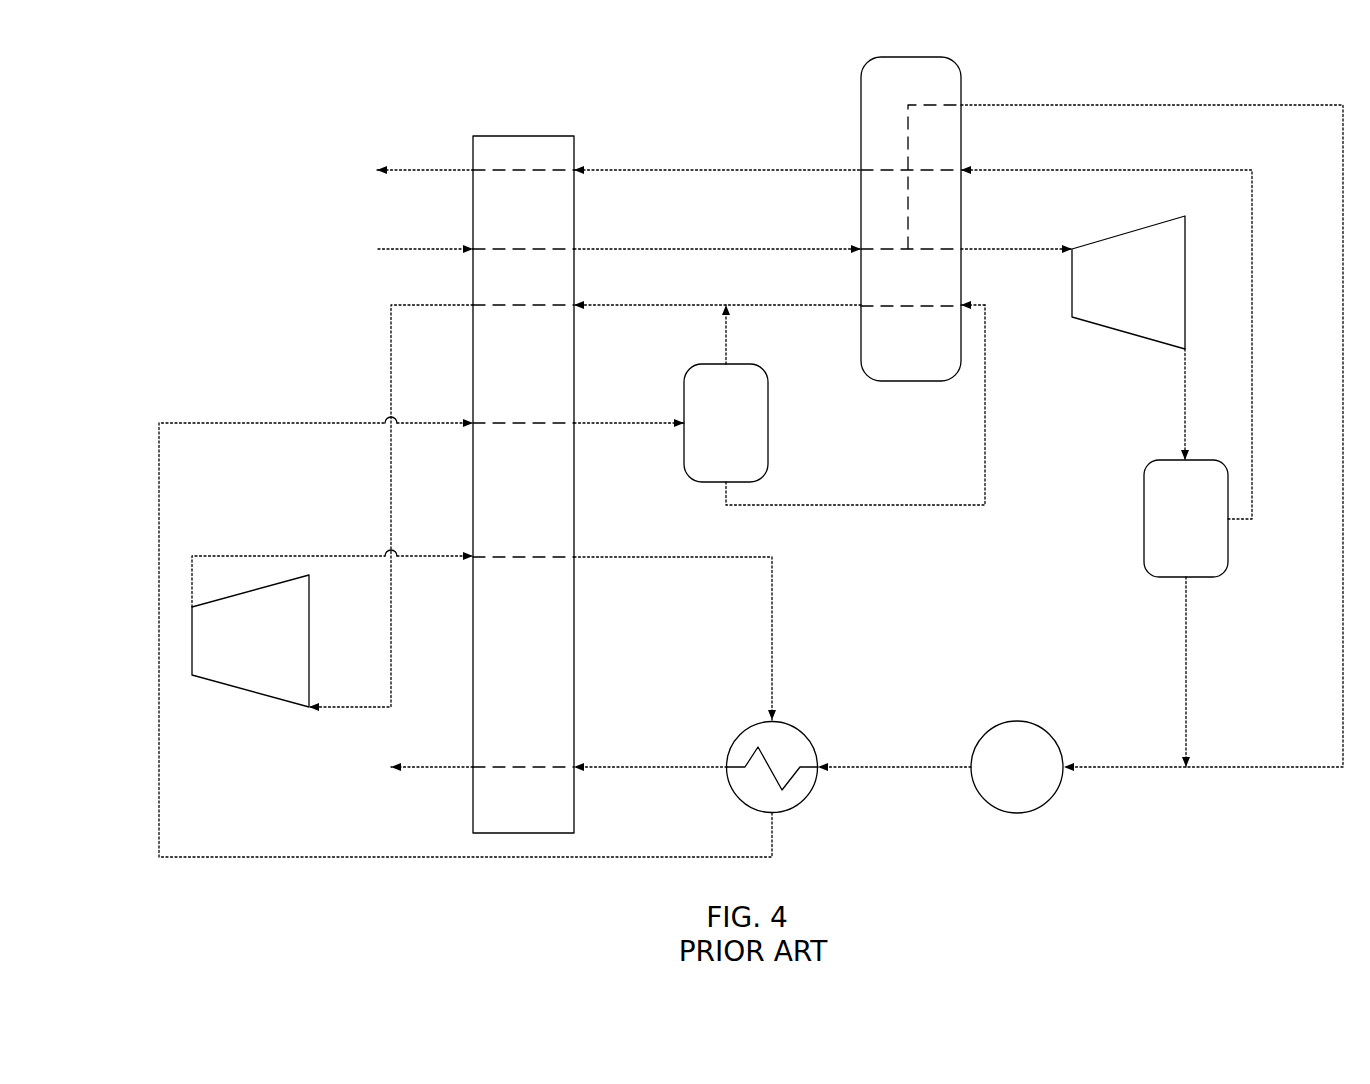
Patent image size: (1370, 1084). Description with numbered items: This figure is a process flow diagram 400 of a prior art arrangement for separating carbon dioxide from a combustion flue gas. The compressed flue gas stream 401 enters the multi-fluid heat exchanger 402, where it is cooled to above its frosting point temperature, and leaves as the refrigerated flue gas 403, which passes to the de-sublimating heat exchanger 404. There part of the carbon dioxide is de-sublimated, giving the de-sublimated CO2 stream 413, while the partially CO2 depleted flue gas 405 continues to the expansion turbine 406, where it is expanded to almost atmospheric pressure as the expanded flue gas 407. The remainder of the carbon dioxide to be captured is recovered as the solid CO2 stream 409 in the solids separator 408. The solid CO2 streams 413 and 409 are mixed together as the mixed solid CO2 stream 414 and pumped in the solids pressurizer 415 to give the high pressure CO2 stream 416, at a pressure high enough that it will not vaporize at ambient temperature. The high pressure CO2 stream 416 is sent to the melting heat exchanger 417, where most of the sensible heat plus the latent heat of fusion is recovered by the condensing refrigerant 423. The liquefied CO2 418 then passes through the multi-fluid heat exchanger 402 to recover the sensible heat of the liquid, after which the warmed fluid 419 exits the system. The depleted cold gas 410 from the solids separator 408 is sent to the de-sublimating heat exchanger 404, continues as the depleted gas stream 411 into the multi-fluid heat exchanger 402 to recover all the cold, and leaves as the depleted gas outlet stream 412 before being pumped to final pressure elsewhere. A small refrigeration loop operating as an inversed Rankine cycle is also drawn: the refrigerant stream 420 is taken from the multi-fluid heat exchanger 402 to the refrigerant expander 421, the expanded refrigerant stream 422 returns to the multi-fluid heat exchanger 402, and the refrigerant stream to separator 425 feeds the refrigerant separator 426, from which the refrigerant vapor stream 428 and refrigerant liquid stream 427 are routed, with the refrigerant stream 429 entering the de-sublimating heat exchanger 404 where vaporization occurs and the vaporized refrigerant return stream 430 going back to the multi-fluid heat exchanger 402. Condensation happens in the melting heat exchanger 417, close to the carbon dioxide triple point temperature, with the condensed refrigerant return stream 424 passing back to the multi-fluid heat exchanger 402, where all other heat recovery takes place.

The process flow diagram 400 is at (240, 105).
The compressed flue gas stream 401 is at (396, 250).
The multi-fluid heat exchanger 402 is at (574, 484).
The refrigerated flue gas 403 is at (717, 236).
The de-sublimating heat exchanger 404 is at (861, 113).
The partially CO2 depleted flue gas 405 is at (1016, 236).
The expansion turbine 406 is at (1080, 320).
The expanded flue gas 407 is at (1158, 404).
The solids separator 408 is at (1144, 516).
The solid CO2 stream 409 is at (1160, 672).
The depleted cold gas 410 is at (1106, 330).
The depleted gas stream 411 is at (717, 158).
The depleted gas outlet stream 412 is at (396, 170).
The de-sublimated CO2 stream 413 is at (1152, 421).
The mixed solid CO2 stream 414 is at (1203, 754).
The solids pressurizer 415 is at (1000, 812).
The high pressure CO2 stream 416 is at (894, 753).
The melting heat exchanger 417 is at (807, 740).
The liquefied CO2 418 is at (650, 753).
The warmed fluid 419 is at (403, 768).
The refrigerant stream 420 is at (391, 508).
The refrigerant expander 421 is at (255, 690).
The expanded refrigerant stream 422 is at (332, 564).
The condensing refrigerant 423 is at (675, 623).
The condensed refrigerant return stream 424 is at (465, 655).
The refrigerant stream to separator 425 is at (629, 410).
The refrigerant separator 426 is at (768, 413).
The refrigerant liquid stream 427 is at (855, 407).
The refrigerant vapor stream 428 is at (701, 334).
The refrigerant stream to de-sublimating heat exchanger 429 is at (878, 292).
The vaporized refrigerant return stream 430 is at (717, 293).